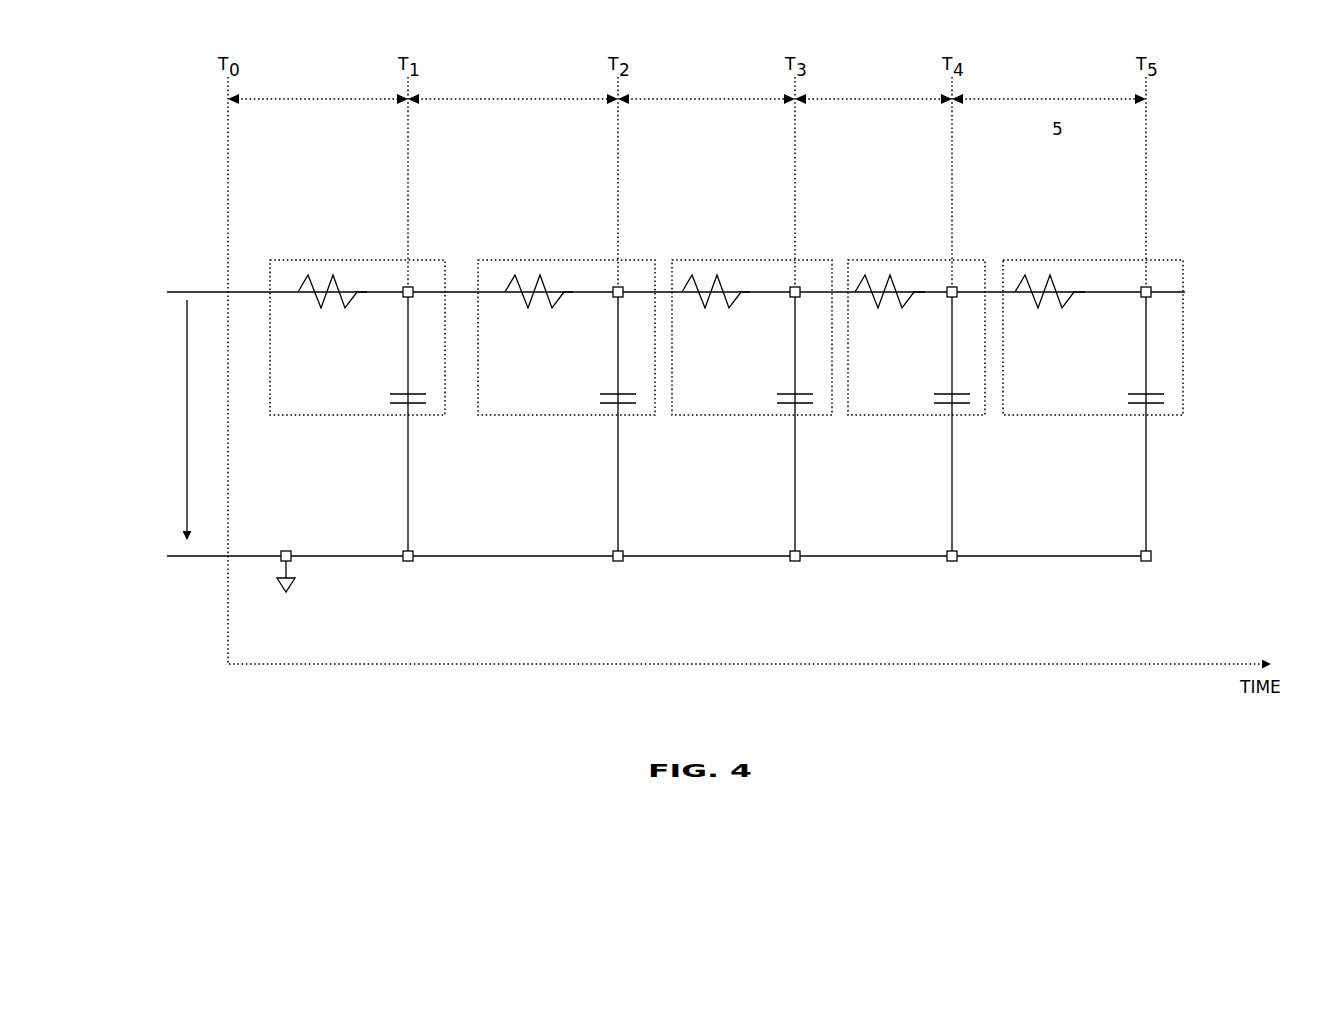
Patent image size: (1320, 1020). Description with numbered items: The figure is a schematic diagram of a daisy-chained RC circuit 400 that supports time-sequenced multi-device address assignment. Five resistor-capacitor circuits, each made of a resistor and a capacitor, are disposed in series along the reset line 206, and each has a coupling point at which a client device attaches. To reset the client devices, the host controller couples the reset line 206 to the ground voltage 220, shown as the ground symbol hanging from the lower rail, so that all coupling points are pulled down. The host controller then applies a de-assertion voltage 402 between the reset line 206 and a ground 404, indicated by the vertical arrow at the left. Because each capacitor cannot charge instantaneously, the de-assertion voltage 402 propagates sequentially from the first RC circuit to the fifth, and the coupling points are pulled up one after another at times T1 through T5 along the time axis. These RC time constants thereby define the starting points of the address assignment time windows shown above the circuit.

The daisy-chained RC circuit 400 is at (134, 183).
The reset line 206 is at (212, 292).
The de-assertion voltage 402 is at (187, 372).
The ground 404 is at (196, 557).
The ground voltage 220 is at (292, 592).